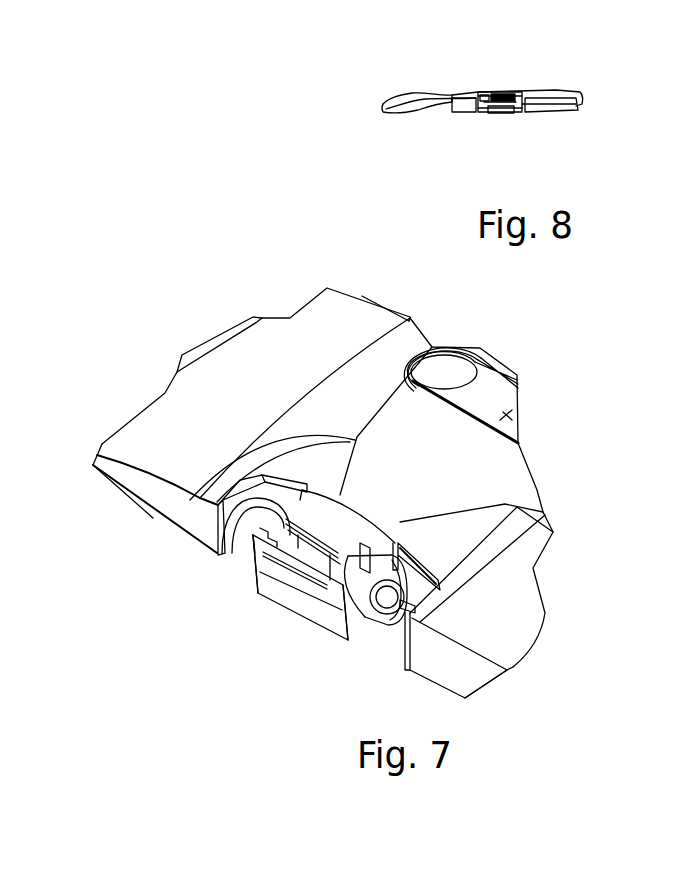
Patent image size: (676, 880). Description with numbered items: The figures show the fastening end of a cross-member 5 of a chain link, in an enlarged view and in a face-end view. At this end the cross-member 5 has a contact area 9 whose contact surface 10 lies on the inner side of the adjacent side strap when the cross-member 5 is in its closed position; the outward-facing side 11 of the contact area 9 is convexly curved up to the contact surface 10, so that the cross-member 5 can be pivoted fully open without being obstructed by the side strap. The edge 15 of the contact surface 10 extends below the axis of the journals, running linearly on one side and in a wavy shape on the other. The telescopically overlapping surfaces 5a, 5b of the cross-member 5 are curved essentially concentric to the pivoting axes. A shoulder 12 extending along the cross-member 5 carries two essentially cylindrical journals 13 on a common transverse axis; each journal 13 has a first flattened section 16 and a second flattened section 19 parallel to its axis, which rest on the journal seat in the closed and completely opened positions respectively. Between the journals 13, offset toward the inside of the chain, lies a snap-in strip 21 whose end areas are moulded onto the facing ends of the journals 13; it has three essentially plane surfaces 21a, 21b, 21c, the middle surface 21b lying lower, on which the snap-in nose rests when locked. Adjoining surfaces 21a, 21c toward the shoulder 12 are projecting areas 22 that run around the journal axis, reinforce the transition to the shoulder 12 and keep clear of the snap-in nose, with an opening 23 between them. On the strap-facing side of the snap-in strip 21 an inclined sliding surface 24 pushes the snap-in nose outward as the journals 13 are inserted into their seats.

In FIG. 8, the cross-member 5 is at (592, 82).
In FIG. 8, the telescopically overlapping surface 5a is at (395, 99).
In FIG. 8, the telescopically overlapping surface 5b is at (565, 112).
In FIG. 7, the contact area 9 is at (157, 430).
In FIG. 8, the contact surface 10 is at (440, 108).
In FIG. 7, the contact surface 10 is at (162, 508).
In FIG. 8, the side of contact area 11 is at (467, 91).
In FIG. 7, the shoulder 12 is at (332, 520).
In FIG. 8, the journal 13 is at (515, 90).
In FIG. 7, the journal 13 is at (240, 538).
In FIG. 7, the edge of contact surface 15 is at (134, 463).
In FIG. 7, the first flattened section 16 is at (257, 542).
In FIG. 7, the second flattened section 19 is at (250, 498).
In FIG. 8, the snap-in strip 21 is at (500, 108).
In FIG. 7, the snap-in strip 21 is at (302, 588).
In FIG. 7, the plane surface of snap-in strip 21a is at (255, 560).
In FIG. 7, the lower-lying surface 21b is at (278, 567).
In FIG. 7, the plane surface of snap-in strip 21c is at (327, 615).
In FIG. 7, the projecting area 22 is at (275, 515).
In FIG. 7, the opening 23 is at (350, 535).
In FIG. 7, the inclined sliding surface 24 is at (305, 612).